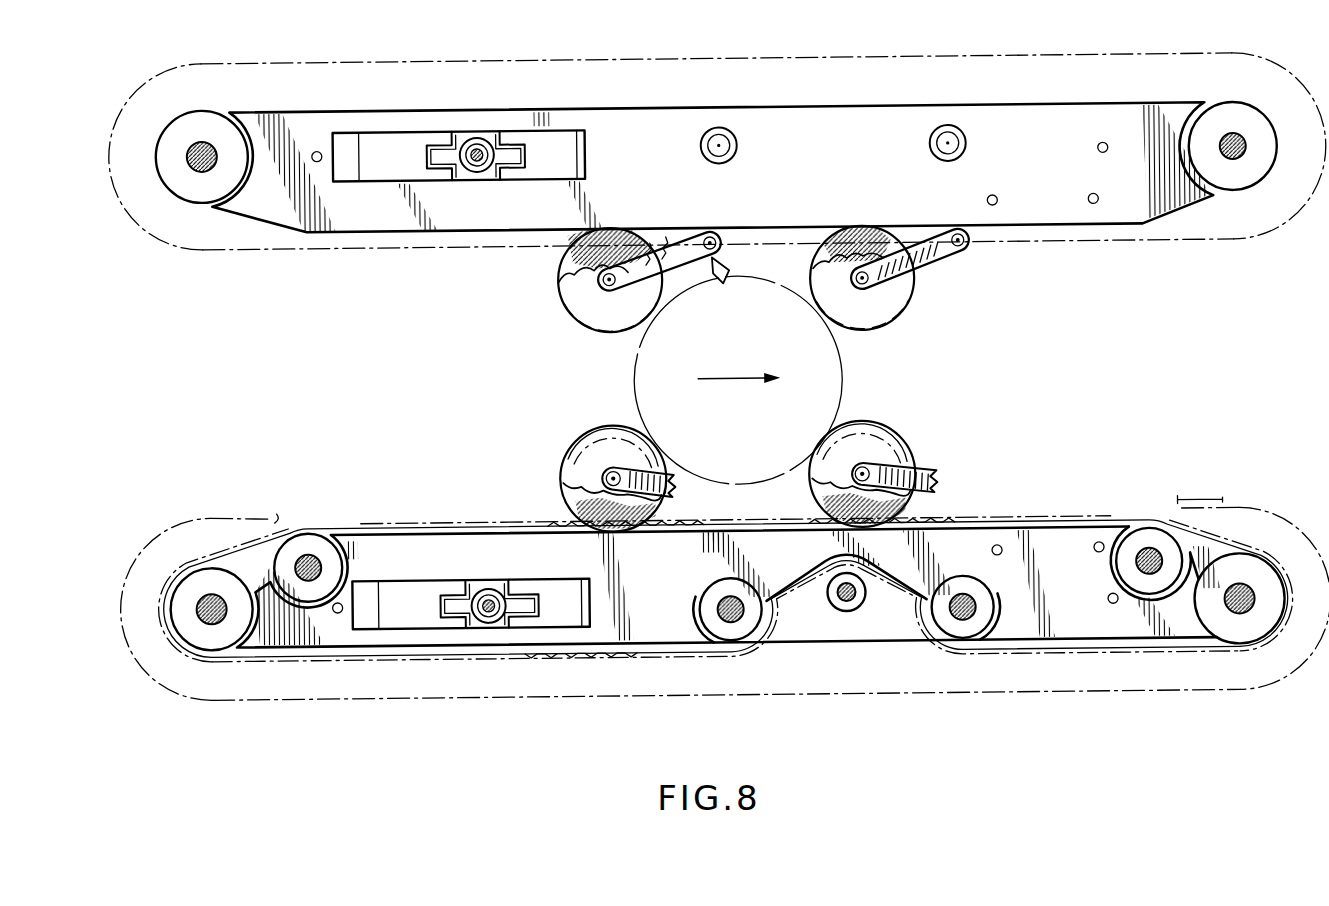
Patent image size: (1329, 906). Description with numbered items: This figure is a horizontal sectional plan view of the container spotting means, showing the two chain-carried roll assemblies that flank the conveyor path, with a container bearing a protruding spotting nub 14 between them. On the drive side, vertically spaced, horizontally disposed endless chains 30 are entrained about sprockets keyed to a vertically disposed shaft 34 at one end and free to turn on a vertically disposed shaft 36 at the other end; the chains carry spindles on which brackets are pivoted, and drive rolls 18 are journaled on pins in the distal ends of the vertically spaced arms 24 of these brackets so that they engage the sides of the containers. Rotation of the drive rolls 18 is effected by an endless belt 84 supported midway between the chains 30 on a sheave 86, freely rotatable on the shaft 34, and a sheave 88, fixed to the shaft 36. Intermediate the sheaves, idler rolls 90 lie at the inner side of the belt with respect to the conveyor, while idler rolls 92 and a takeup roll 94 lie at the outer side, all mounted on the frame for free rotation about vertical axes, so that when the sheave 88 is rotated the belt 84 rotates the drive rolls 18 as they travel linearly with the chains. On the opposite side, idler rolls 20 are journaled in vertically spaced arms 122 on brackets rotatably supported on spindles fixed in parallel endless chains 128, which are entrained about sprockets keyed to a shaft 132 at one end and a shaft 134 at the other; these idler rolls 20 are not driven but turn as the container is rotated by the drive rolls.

The endless chains 128 is at (804, 58).
The shaft 134 is at (203, 137).
The shaft 132 is at (1233, 140).
The spotting nub 14 is at (749, 278).
The idler rolls 20 is at (577, 296).
The arms 122 is at (952, 253).
The drive rolls 18 is at (575, 442).
The arms 24 is at (938, 481).
The endless chains 30 is at (683, 697).
The endless belt 84 is at (532, 659).
The sheave 88 is at (184, 603).
The shaft 36 is at (210, 592).
The idler rolls 90 is at (311, 536).
The sheave 86 is at (1272, 606).
The shaft 34 is at (1241, 589).
The idler rolls 92 is at (735, 629).
The takeup roll 94 is at (844, 609).